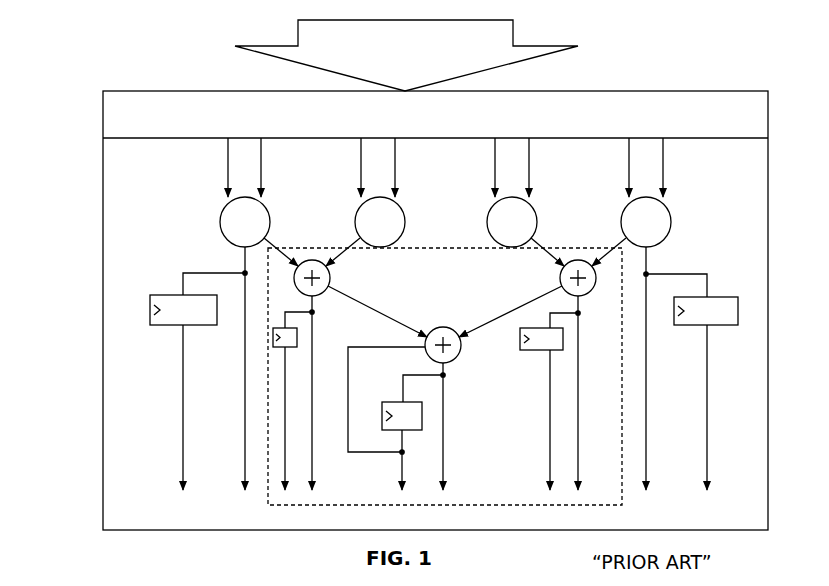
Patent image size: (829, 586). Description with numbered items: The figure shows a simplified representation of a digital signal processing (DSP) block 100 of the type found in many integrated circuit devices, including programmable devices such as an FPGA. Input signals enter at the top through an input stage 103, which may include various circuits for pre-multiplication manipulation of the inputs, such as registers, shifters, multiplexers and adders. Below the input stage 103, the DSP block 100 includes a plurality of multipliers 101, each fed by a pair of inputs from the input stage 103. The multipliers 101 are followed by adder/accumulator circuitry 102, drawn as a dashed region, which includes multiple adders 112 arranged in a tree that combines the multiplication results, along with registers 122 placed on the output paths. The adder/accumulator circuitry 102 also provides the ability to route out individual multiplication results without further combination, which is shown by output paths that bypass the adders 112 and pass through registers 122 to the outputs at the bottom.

The digital signal processing (DSP) block 100 is at (128, 32).
The input stage 103 is at (103, 167).
The multipliers 101 is at (355, 222).
The adders 112 is at (331, 281).
The registers 122 is at (193, 326).
The adder/accumulator circuitry 102 is at (625, 500).